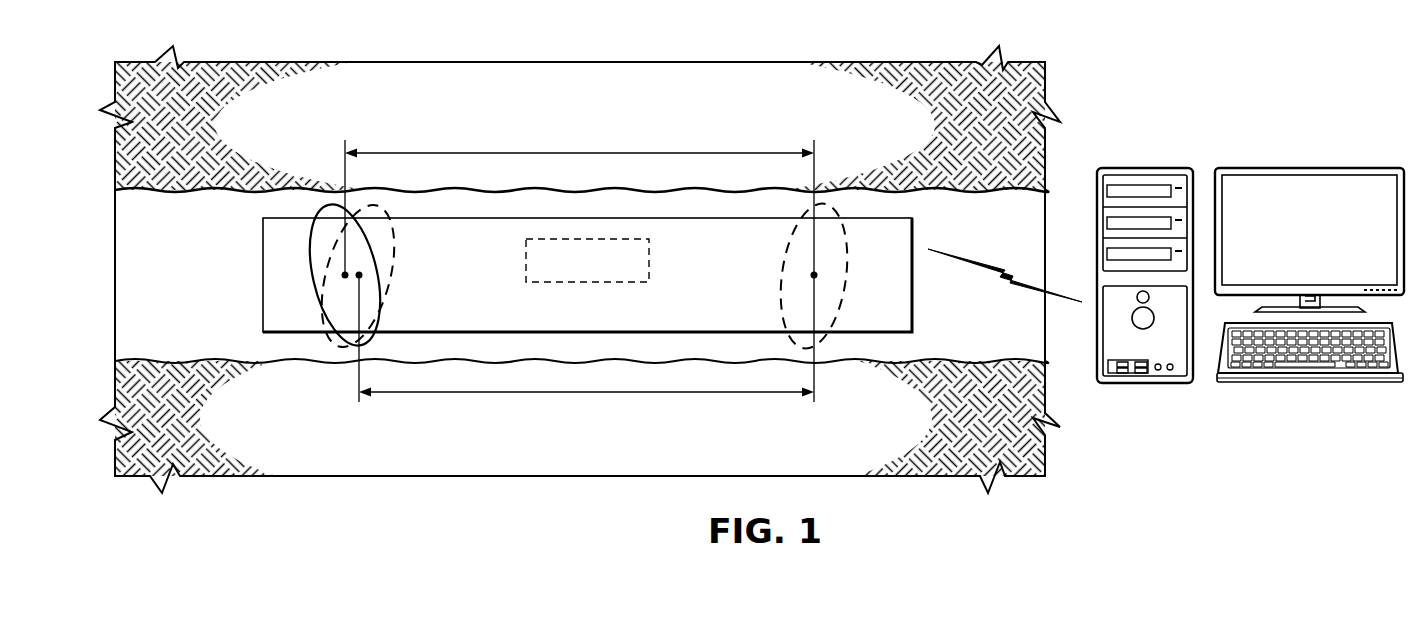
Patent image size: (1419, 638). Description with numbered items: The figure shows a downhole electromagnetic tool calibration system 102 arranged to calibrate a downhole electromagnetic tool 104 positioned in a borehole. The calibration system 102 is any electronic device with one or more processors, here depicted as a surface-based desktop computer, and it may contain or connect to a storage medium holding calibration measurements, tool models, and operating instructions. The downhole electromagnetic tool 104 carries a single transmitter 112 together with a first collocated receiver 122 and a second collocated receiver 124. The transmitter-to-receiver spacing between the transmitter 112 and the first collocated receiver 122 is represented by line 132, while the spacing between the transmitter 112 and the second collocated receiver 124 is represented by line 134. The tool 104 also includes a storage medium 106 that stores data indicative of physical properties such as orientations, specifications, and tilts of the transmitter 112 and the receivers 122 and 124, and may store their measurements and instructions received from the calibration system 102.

The downhole electromagnetic tool calibration system 102 is at (1310, 168).
The downhole electromagnetic tool 104 is at (913, 236).
The storage medium 106 is at (650, 262).
The transmitter 112 is at (852, 290).
The first collocated receiver 122 is at (397, 270).
The second collocated receiver 124 is at (305, 248).
The line 132 is at (585, 394).
The line 134 is at (580, 152).